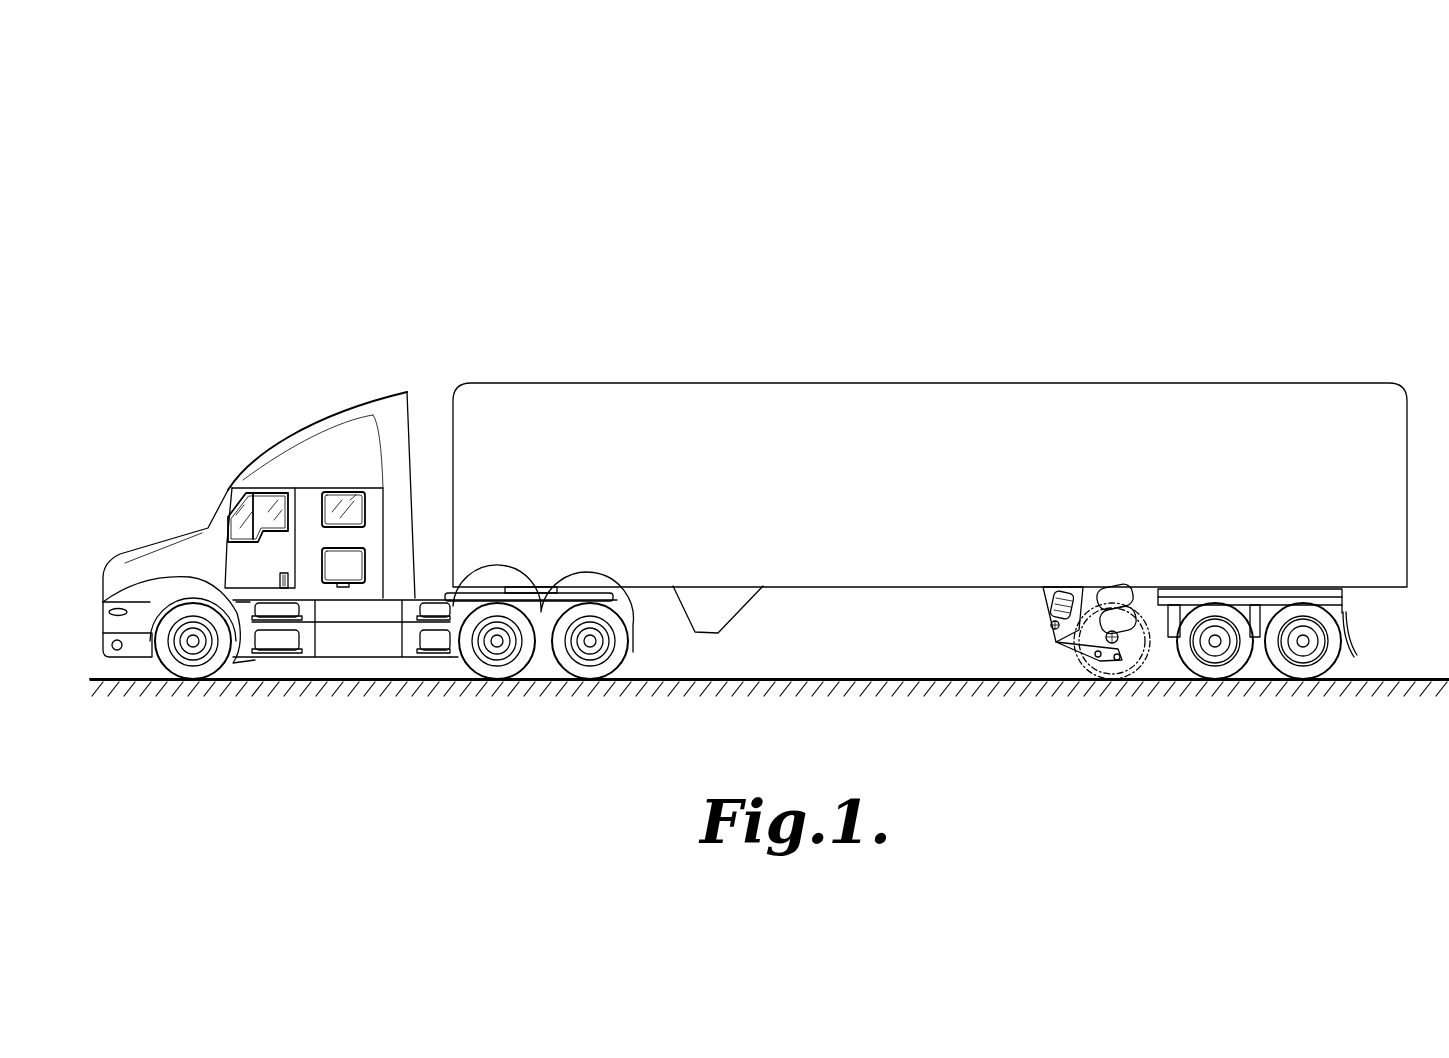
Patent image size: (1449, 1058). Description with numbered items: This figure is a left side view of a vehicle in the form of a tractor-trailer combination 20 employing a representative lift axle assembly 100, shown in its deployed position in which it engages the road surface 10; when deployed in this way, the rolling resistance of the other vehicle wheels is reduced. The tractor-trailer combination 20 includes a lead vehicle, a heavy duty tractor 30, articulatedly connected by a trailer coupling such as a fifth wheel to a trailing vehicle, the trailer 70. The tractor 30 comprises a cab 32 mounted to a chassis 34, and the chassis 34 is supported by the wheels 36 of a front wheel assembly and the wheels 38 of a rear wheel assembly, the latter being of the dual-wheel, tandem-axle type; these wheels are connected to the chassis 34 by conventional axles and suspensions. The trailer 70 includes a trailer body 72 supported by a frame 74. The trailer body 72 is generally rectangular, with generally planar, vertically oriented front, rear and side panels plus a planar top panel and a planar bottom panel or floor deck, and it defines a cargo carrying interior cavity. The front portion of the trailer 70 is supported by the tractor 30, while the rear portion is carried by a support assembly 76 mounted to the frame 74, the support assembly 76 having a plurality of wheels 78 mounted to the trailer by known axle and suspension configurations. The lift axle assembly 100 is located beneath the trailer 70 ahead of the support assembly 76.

The road surface 10 is at (1400, 678).
The tractor-trailer combination 20 is at (875, 205).
The tractor 30 is at (384, 537).
The cab 32 is at (240, 470).
The chassis 34 is at (418, 600).
The wheels of front wheel assembly 36 is at (178, 667).
The wheels of rear wheel assembly 38 is at (480, 667).
The trailer 70 is at (930, 534).
The trailer body 72 is at (1130, 383).
The frame 74 is at (837, 587).
The support assembly 76 is at (1263, 672).
The wheels 78 is at (1200, 666).
The lift axle assembly 100 is at (1046, 638).